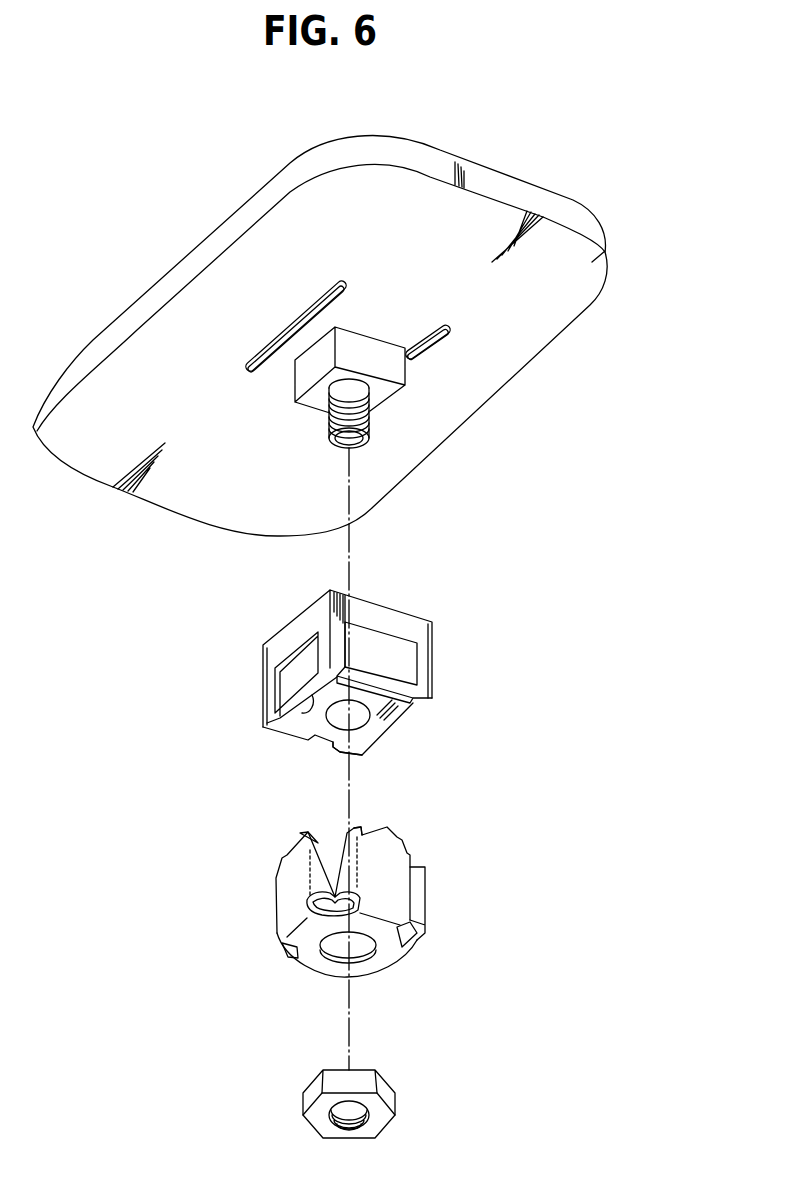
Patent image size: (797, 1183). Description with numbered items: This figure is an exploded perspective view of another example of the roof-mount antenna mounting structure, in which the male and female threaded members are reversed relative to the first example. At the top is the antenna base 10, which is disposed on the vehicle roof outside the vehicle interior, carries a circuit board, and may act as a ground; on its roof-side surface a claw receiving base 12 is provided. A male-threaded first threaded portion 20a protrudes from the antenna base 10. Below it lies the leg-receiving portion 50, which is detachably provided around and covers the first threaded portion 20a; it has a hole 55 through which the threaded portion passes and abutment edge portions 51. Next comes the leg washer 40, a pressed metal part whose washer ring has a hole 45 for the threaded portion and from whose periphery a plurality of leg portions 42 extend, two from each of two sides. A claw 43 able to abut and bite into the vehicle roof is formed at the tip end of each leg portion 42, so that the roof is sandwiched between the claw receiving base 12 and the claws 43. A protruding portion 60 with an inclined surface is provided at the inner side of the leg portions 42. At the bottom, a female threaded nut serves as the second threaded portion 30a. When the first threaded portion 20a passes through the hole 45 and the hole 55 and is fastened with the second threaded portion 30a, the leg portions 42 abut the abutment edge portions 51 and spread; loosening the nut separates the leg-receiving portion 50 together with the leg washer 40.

The antenna base 10 is at (598, 257).
The claw receiving base 12 is at (347, 284).
The first threaded portion 20a is at (330, 441).
The second threaded portion 30a is at (395, 1096).
The leg washer 40 is at (341, 905).
The leg portions 42 is at (390, 883).
The claw 43 is at (387, 825).
The hole 45 is at (360, 947).
The leg-receiving portion 50 is at (268, 653).
The abutment edge portion 51 is at (287, 715).
The hole 55 is at (355, 723).
The protruding portion 60 is at (317, 873).